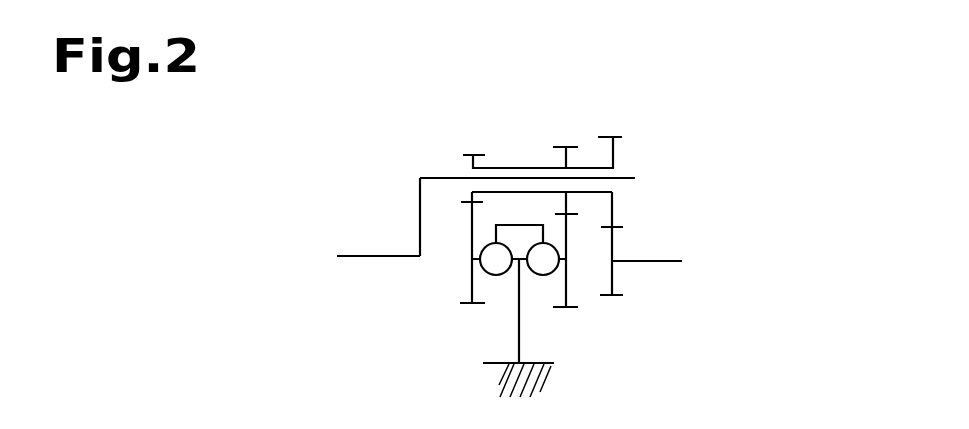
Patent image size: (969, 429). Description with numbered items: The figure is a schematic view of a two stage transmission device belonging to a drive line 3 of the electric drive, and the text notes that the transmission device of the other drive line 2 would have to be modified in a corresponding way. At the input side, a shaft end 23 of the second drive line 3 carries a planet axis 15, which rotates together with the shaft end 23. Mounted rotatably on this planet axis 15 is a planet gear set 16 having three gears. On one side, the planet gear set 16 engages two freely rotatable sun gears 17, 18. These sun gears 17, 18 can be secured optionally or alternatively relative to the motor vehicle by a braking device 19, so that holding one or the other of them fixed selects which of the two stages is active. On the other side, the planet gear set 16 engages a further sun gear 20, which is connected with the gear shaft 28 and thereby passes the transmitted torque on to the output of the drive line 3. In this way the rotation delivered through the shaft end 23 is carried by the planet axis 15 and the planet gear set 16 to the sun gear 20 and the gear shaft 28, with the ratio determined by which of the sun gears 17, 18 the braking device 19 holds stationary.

The first drive line 2 is at (727, 242).
The second drive line 3 is at (404, 273).
The planet axis 15 is at (441, 177).
The planet gear set 16 is at (525, 225).
The sun gear 17 is at (473, 218).
The sun gear 18 is at (568, 238).
The braking device 19 is at (513, 193).
The sun gear 20 is at (612, 280).
The shaft end 23 is at (383, 232).
The gear shaft 28 is at (650, 261).